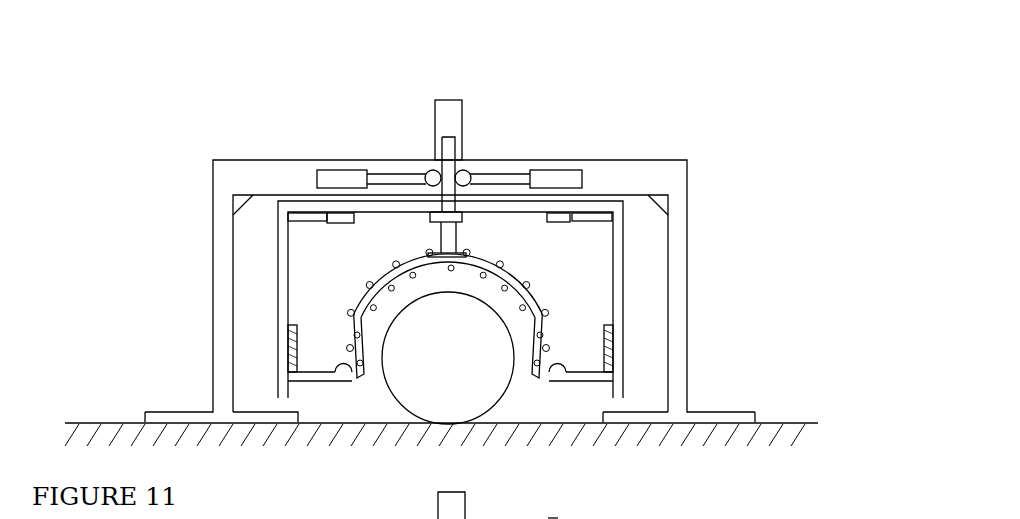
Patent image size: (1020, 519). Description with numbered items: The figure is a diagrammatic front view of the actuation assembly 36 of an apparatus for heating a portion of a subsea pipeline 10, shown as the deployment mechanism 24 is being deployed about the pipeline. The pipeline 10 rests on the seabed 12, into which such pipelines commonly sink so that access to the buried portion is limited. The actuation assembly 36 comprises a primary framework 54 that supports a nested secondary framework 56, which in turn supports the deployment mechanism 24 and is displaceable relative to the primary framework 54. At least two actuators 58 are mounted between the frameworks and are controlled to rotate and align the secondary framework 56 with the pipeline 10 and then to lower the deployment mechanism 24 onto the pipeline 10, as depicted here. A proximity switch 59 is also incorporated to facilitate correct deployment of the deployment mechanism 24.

The subsea pipeline 10 is at (436, 374).
The seabed 12 is at (795, 422).
The deployment mechanism 24 is at (348, 282).
The actuation assembly 36 is at (174, 243).
The primary framework 54 is at (682, 225).
The secondary framework 56 is at (281, 312).
The actuators 58 is at (472, 87).
The proximity switch 59 is at (553, 518).